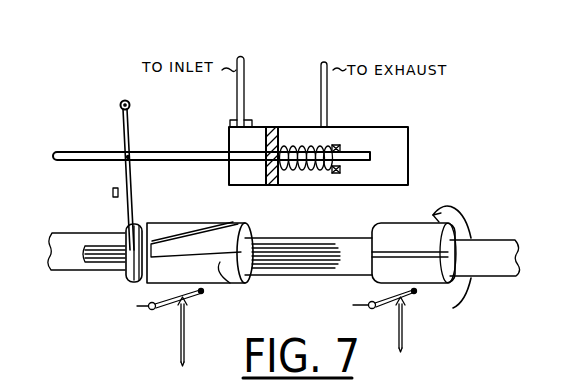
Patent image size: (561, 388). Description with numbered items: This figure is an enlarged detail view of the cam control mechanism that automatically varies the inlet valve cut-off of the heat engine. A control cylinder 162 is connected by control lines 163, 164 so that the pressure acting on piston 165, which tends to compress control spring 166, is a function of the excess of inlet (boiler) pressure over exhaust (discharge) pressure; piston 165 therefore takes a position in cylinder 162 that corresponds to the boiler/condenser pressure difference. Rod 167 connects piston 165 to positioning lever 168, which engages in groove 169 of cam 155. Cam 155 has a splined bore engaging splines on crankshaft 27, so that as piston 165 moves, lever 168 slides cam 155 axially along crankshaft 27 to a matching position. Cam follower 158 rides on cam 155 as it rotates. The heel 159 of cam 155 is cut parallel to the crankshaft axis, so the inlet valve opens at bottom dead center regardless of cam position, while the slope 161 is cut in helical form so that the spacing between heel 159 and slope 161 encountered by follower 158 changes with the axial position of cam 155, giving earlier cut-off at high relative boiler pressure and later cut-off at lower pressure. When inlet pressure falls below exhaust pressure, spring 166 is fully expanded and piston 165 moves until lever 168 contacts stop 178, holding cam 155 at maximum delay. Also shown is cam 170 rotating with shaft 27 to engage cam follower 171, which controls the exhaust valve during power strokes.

The crankshaft 27 is at (305, 280).
The cam 155 is at (190, 222).
The cam follower 158 is at (195, 294).
The heel 159 is at (230, 283).
The slope 161 is at (234, 222).
The control cylinder 162 is at (292, 189).
The control line 163 is at (236, 90).
The control line 164 is at (329, 90).
The piston 165 is at (272, 126).
The control spring 166 is at (318, 150).
The rod 167 is at (178, 151).
The positioning lever 168 is at (122, 172).
The groove 169 is at (140, 285).
The cam 170 is at (405, 217).
The cam follower 171 is at (418, 296).
The stop 178 is at (112, 196).